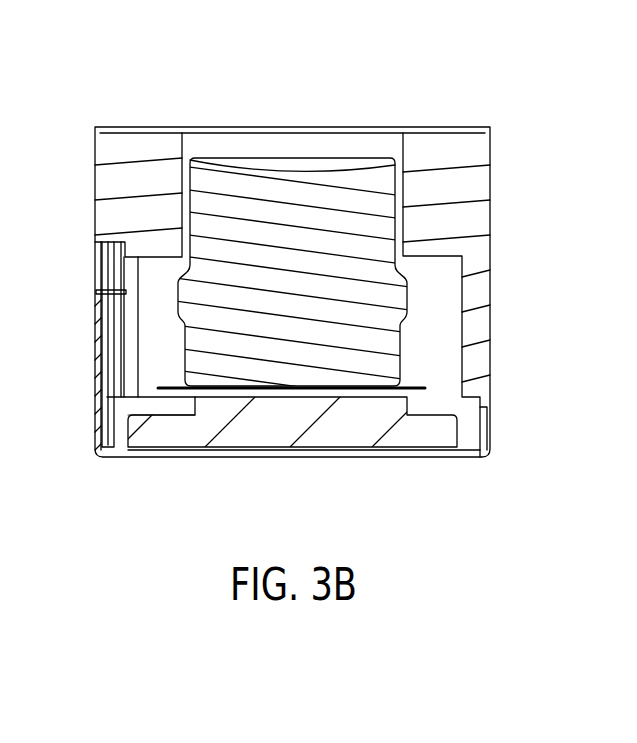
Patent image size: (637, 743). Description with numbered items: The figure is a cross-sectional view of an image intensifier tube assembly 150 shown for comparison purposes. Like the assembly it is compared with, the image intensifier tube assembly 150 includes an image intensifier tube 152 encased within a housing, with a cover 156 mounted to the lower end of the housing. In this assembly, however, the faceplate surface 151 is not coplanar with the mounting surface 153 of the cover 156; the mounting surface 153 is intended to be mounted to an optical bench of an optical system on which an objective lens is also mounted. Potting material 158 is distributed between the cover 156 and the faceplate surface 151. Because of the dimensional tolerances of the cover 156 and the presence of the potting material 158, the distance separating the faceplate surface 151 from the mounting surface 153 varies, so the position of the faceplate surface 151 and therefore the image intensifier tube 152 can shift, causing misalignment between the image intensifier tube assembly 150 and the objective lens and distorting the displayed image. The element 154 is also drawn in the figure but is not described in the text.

The image intensifier tube assembly 150 is at (96, 65).
The faceplate surface 151 is at (257, 448).
The image intensifier tube 152 is at (327, 192).
The mounting surface 153 is at (125, 457).
The filter 154 is at (393, 407).
The cover 156 is at (488, 448).
The potting material 158 is at (177, 445).